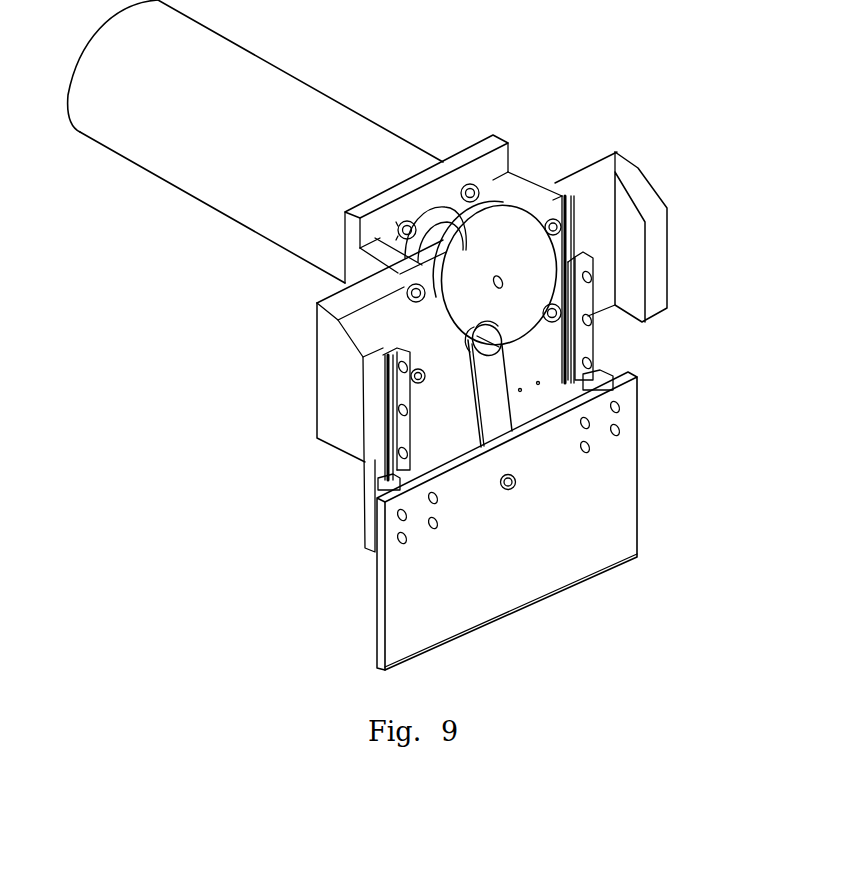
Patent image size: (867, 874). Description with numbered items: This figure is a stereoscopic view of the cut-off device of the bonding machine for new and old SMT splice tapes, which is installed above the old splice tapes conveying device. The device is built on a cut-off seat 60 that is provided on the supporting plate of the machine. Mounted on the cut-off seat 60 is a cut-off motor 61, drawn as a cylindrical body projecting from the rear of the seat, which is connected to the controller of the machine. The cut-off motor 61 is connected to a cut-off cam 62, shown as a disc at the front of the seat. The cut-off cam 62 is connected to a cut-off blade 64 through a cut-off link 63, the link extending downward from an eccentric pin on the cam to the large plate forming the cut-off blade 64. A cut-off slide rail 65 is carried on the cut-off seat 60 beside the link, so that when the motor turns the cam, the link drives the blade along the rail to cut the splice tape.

The cut-off seat 60 is at (628, 240).
The cut-off motor 61 is at (353, 133).
The cut-off cam 62 is at (513, 240).
The cut-off link 63 is at (495, 398).
The cut-off blade 64 is at (628, 510).
The cut-off slide rail 65 is at (585, 347).